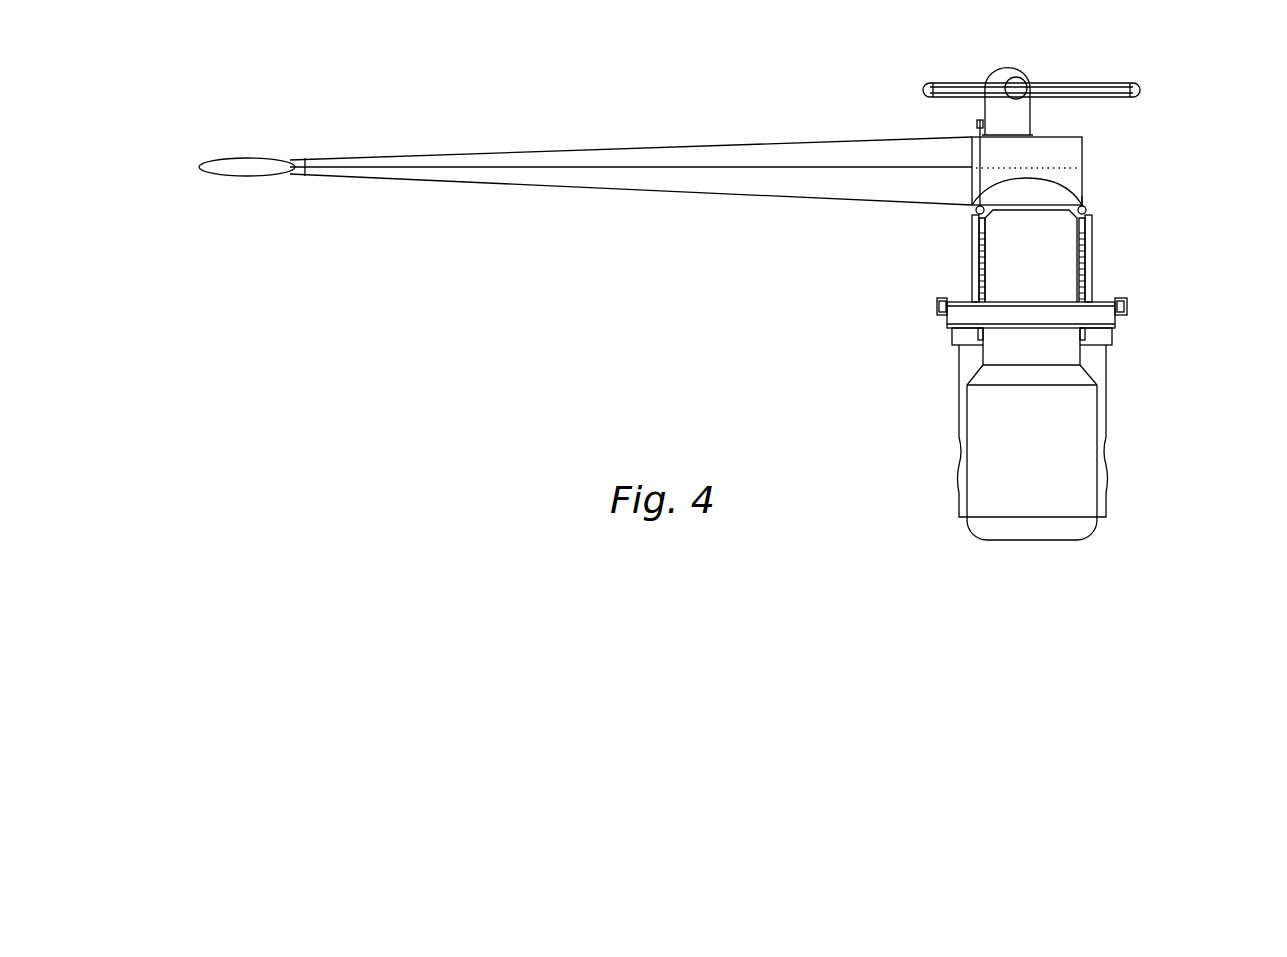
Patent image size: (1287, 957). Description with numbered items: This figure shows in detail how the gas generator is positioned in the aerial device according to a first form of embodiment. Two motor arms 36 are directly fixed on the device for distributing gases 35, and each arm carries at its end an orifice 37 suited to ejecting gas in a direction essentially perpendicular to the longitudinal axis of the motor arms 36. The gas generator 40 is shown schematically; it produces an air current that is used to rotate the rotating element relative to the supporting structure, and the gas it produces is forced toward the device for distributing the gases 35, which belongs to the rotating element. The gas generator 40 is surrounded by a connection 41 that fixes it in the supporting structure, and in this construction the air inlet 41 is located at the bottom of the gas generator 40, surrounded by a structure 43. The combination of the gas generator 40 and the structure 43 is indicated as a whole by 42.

The device for distributing gases 35 is at (1068, 157).
The motor arms 36 is at (553, 157).
The orifice 37 is at (247, 162).
The gas generator 40 is at (1058, 433).
The connection 41 is at (962, 457).
The combination of gas generator and structure 42 is at (1011, 473).
The structure 43 is at (968, 367).